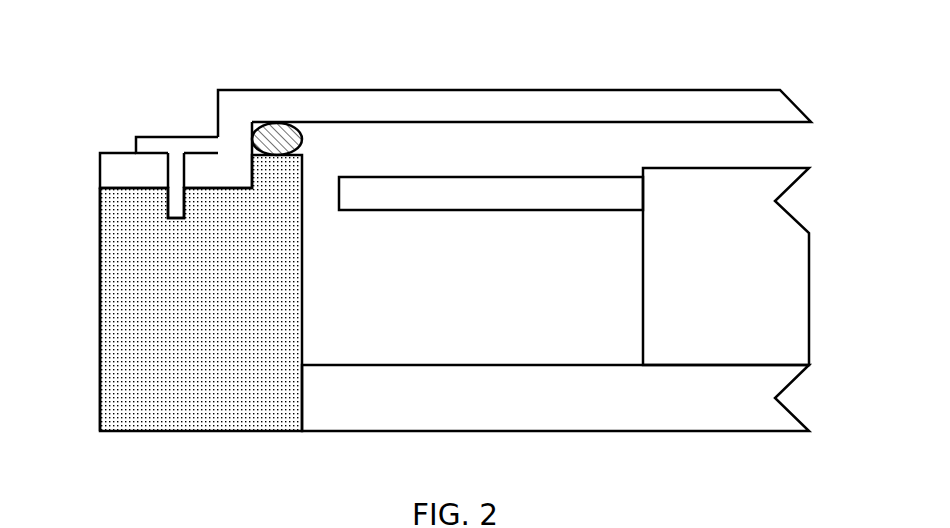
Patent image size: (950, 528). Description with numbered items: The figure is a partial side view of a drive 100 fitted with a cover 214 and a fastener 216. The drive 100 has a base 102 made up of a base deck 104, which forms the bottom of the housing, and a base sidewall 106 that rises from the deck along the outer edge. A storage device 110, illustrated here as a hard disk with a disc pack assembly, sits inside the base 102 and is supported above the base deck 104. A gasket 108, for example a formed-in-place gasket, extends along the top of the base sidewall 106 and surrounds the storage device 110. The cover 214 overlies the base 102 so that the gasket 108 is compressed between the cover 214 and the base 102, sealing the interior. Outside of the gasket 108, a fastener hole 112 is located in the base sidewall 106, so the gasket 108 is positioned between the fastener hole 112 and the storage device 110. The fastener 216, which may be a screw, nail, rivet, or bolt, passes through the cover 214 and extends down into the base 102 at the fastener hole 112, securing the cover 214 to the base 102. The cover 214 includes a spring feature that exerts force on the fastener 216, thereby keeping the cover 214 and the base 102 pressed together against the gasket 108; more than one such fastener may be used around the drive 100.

The drive 100 is at (118, 83).
The base 102 is at (100, 305).
The base deck 104 is at (678, 398).
The base sidewall 106 is at (202, 400).
The gasket 108 is at (273, 130).
The storage device 110 is at (828, 168).
The fastener hole 112 is at (168, 198).
The cover 214 is at (385, 108).
The fastener 216 is at (155, 145).